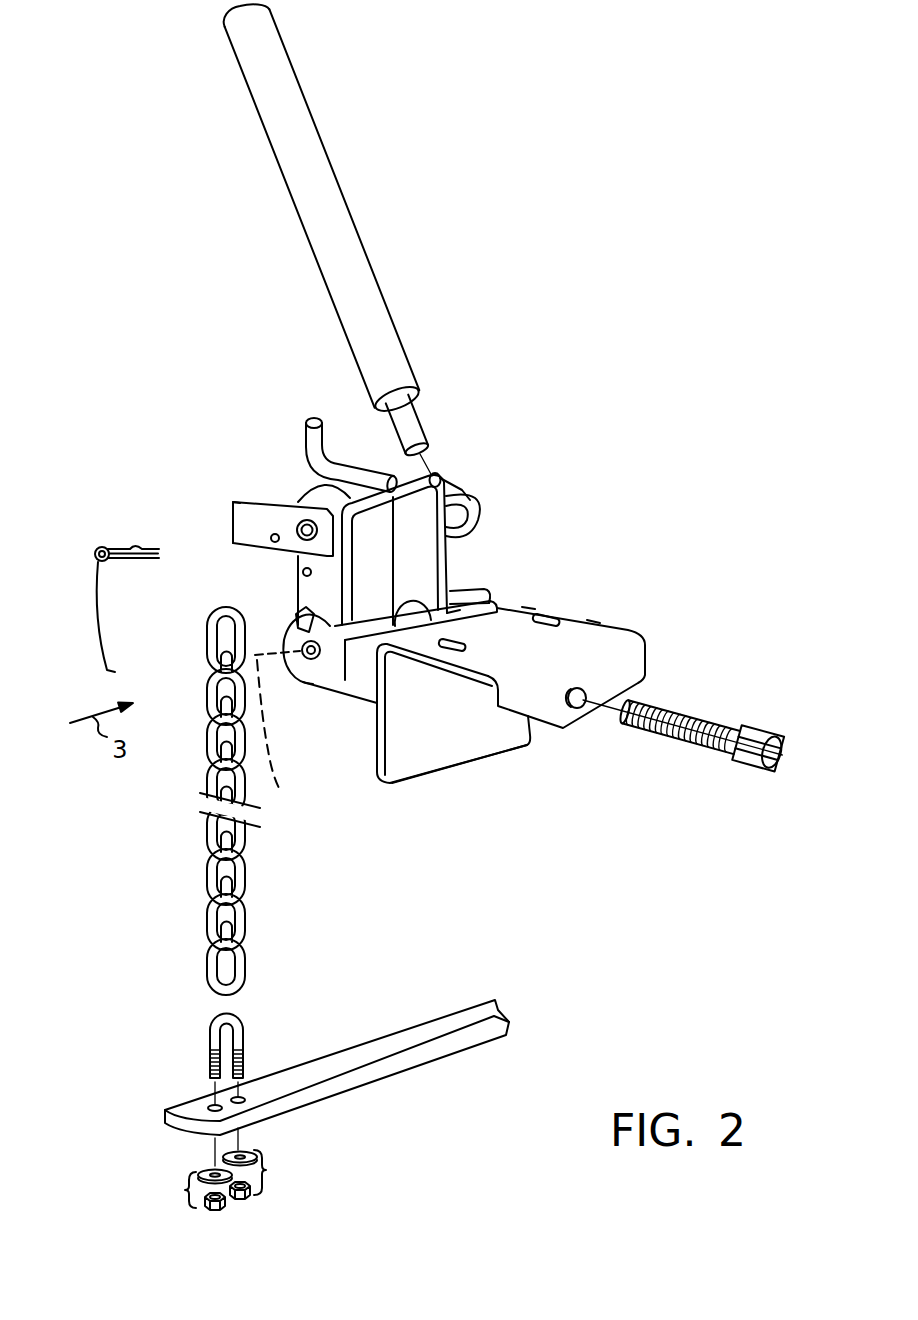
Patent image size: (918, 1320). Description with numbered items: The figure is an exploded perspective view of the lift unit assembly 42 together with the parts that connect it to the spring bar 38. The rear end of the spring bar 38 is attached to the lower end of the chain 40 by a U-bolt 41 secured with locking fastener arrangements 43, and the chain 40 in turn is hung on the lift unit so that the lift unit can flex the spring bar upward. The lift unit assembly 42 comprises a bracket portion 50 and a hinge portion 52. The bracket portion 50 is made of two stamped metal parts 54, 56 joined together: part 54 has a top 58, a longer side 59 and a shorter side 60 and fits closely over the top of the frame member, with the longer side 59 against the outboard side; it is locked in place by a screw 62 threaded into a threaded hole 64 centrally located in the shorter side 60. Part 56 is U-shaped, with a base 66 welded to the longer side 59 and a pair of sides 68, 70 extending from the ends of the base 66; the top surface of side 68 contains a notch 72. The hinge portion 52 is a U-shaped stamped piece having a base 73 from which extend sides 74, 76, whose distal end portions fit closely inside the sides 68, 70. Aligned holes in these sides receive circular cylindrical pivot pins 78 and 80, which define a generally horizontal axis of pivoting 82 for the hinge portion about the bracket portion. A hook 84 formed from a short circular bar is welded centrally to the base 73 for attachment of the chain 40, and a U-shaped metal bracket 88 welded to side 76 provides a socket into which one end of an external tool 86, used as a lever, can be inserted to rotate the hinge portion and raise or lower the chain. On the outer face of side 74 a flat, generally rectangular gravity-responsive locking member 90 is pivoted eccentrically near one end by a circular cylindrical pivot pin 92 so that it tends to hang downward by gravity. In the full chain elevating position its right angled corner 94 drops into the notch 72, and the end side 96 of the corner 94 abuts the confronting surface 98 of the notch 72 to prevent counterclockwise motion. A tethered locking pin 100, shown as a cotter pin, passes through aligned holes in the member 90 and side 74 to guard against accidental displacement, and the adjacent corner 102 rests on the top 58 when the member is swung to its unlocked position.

The spring bar 38 is at (440, 1058).
The chain 40 is at (252, 862).
The U-bolt 41 is at (250, 1022).
The lift unit assembly 42 is at (407, 788).
The locking fastener arrangements 43 is at (180, 1190).
The bracket portion 50 is at (640, 637).
The hinge portion 52 is at (338, 500).
The stamped metal part 54 is at (590, 622).
The stamped metal part 56 is at (522, 607).
The top 58 is at (512, 625).
The longer side 59 is at (447, 760).
The shorter side 60 is at (617, 678).
The screw 62 is at (698, 748).
The threaded hole 64 is at (577, 710).
The base 66 is at (526, 595).
The side 68 is at (353, 693).
The side 70 is at (480, 605).
The notch 72 is at (325, 620).
The base 73 is at (316, 482).
The side 74 is at (300, 586).
The side 76 is at (460, 578).
The pivot pin 78 is at (315, 672).
The pivot pin 80 is at (410, 600).
The axis of pivoting 82 is at (280, 737).
The hook 84 is at (306, 418).
The external tool 86 is at (352, 212).
The U-shaped metal bracket 88 is at (458, 494).
The gravity-responsive locking member 90 is at (255, 503).
The pivot pin 92 is at (297, 524).
The right angled corner 94 is at (228, 545).
The end side 96 is at (227, 538).
The confronting surface 98 is at (320, 614).
The tethered locking pin 100 is at (128, 562).
The corner 102 is at (232, 503).